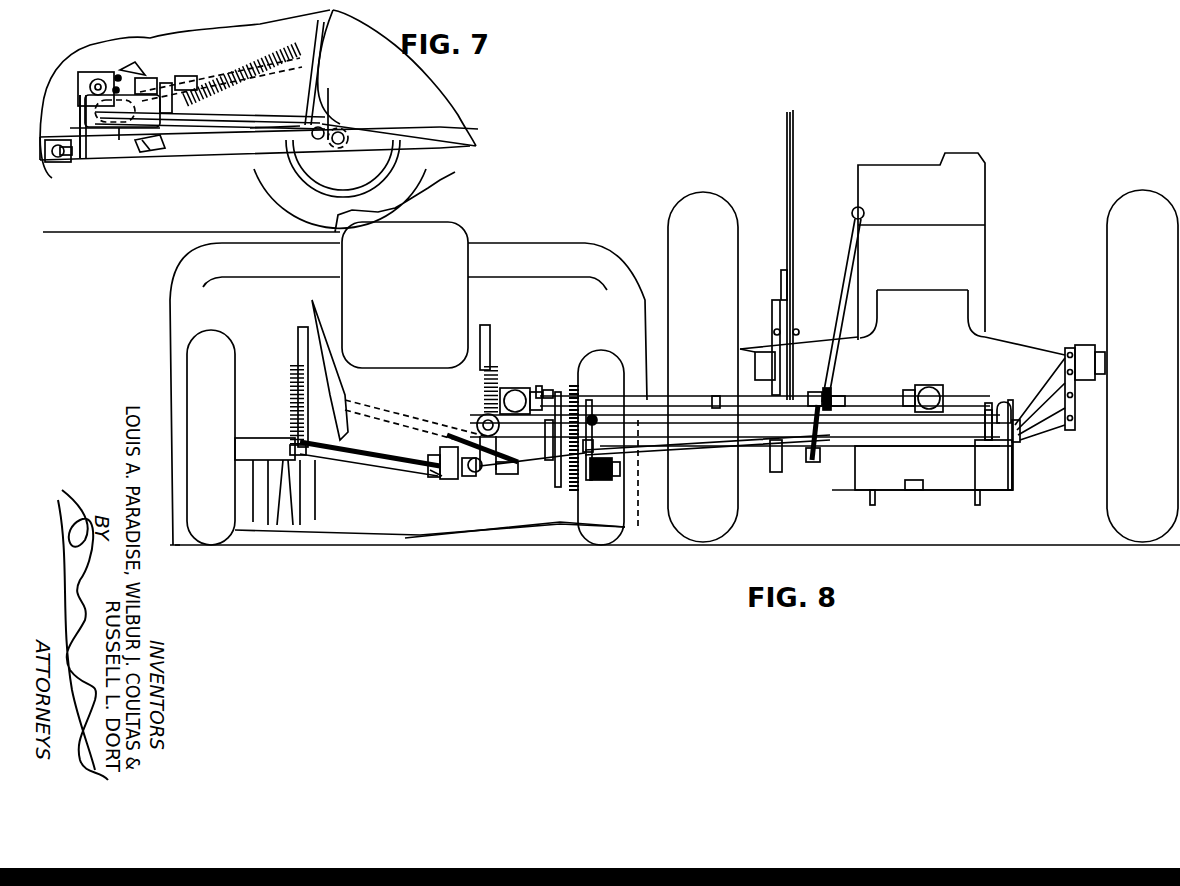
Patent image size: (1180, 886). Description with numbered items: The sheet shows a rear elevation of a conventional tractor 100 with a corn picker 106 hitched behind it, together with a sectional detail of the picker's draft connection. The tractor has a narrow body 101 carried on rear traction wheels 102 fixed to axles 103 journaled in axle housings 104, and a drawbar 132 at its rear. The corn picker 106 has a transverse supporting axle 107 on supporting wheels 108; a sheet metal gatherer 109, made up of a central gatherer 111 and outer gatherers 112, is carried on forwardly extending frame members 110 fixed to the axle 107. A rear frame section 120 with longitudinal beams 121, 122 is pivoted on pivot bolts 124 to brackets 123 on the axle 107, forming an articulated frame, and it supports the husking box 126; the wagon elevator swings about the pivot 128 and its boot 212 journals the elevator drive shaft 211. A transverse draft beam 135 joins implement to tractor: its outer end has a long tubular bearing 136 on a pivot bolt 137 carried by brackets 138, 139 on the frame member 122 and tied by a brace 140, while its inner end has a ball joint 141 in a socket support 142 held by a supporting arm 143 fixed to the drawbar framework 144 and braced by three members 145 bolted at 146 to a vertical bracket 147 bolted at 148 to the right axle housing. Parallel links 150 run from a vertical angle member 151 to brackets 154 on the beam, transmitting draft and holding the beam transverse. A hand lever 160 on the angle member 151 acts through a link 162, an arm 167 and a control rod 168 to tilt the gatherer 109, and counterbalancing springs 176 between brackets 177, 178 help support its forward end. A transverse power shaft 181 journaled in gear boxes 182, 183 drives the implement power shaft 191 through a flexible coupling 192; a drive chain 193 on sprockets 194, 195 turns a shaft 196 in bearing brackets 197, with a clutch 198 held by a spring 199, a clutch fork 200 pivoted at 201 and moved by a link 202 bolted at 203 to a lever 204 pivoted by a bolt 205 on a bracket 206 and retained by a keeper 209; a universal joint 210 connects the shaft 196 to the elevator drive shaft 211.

In FIG. 8, the tractor 100 is at (998, 165).
In FIG. 8, the tractor body 101 is at (933, 192).
In FIG. 8, the traction wheels 102 is at (724, 516).
In FIG. 8, the axles 103 is at (750, 364).
In FIG. 8, the axle housings 104 is at (815, 348).
In FIG. 8, the corn picker 106 is at (526, 183).
In FIG. 7, the transverse supporting axle 107 is at (340, 142).
In FIG. 8, the transverse supporting axle 107 is at (257, 440).
In FIG. 7, the supporting wheels 108 is at (420, 180).
In FIG. 8, the supporting wheels 108 is at (208, 350).
In FIG. 7, the sheet metal gatherer 109 is at (428, 94).
In FIG. 8, the sheet metal gatherer 109 is at (548, 243).
In FIG. 7, the frame members 110 is at (410, 143).
In FIG. 8, the central gatherer 111 is at (403, 534).
In FIG. 8, the outer gatherers 112 is at (185, 540).
In FIG. 7, the rear frame section 120 is at (193, 158).
In FIG. 8, the longitudinal beam 121 is at (367, 470).
In FIG. 7, the longitudinal frame member 122 is at (260, 143).
In FIG. 8, the longitudinal frame member 122 is at (460, 478).
In FIG. 7, the brackets 123 is at (320, 141).
In FIG. 7, the pivot bolts 124 is at (335, 128).
In FIG. 8, the husking box 126 is at (412, 277).
In FIG. 8, the pivot 128 is at (430, 473).
In FIG. 8, the drawbar 132 is at (923, 482).
In FIG. 7, the draft beam 135 is at (110, 127).
In FIG. 8, the draft beam 135 is at (887, 425).
In FIG. 7, the tubular bearing portion 136 is at (157, 145).
In FIG. 8, the tubular bearing portion 136 is at (484, 418).
In FIG. 7, the pivot bolt 137 is at (180, 92).
In FIG. 8, the pivot bolt 137 is at (478, 432).
In FIG. 7, the bracket 138 is at (188, 78).
In FIG. 7, the bracket 139 is at (148, 112).
In FIG. 8, the bracket 139 is at (480, 438).
In FIG. 7, the longitudinal brace 140 is at (119, 133).
In FIG. 8, the ball joint 141 is at (990, 418).
In FIG. 8, the socket support 142 is at (1005, 402).
In FIG. 8, the supporting arm 143 is at (1003, 475).
In FIG. 8, the drawbar supporting framework 144 is at (940, 490).
In FIG. 8, the bracing members 145 is at (1043, 420).
In FIG. 8, the bolt 146 is at (1020, 437).
In FIG. 8, the vertical bracket 147 is at (1073, 402).
In FIG. 8, the bolts 148 is at (1080, 374).
In FIG. 8, the links 150 is at (777, 343).
In FIG. 8, the vertical structural angle member 151 is at (773, 303).
In FIG. 8, the vertical brackets 154 is at (763, 394).
In FIG. 8, the hand lever 160 is at (793, 145).
In FIG. 7, the link 162 is at (120, 75).
In FIG. 8, the link 162 is at (793, 333).
In FIG. 7, the arm 167 is at (116, 88).
In FIG. 7, the control rod 168 is at (195, 75).
In FIG. 8, the control rod 168 is at (538, 386).
In FIG. 7, the counterbalancing springs 176 is at (268, 68).
In FIG. 8, the counterbalancing springs 176 is at (292, 390).
In FIG. 7, the bracket 177 is at (148, 152).
In FIG. 8, the bracket 177 is at (325, 457).
In FIG. 7, the bracket 178 is at (318, 40).
In FIG. 8, the bracket 178 is at (301, 364).
In FIG. 7, the transverse power shaft 181 is at (89, 90).
In FIG. 8, the transverse power shaft 181 is at (688, 398).
In FIG. 7, the gear box 182 is at (90, 72).
In FIG. 8, the gear box 182 is at (532, 388).
In FIG. 8, the gear box 183 is at (937, 385).
In FIG. 7, the power shaft 191 is at (330, 118).
In FIG. 7, the flexible coupling 192 is at (230, 102).
In FIG. 8, the drive chain 193 is at (590, 405).
In FIG. 8, the sprocket 194 is at (548, 390).
In FIG. 8, the second sprocket 195 is at (557, 482).
In FIG. 8, the shaft 196 is at (542, 468).
In FIG. 8, the bearing brackets 197 is at (555, 452).
In FIG. 8, the clutch 198 is at (589, 479).
In FIG. 8, the spring 199 is at (604, 468).
In FIG. 8, the clutch fork 200 is at (592, 443).
In FIG. 8, the pivot 201 is at (594, 412).
In FIG. 8, the link 202 is at (687, 450).
In FIG. 8, the bolt 203 is at (815, 447).
In FIG. 8, the lever 204 is at (853, 262).
In FIG. 8, the bolt 205 is at (813, 390).
In FIG. 8, the bracket 206 is at (840, 392).
In FIG. 8, the keeper 209 is at (833, 385).
In FIG. 8, the universal joint 210 is at (483, 470).
In FIG. 7, the elevator drive shaft 211 is at (65, 157).
In FIG. 8, the elevator drive shaft 211 is at (458, 480).
In FIG. 7, the boot 212 is at (47, 173).
In FIG. 8, the boot 212 is at (435, 487).